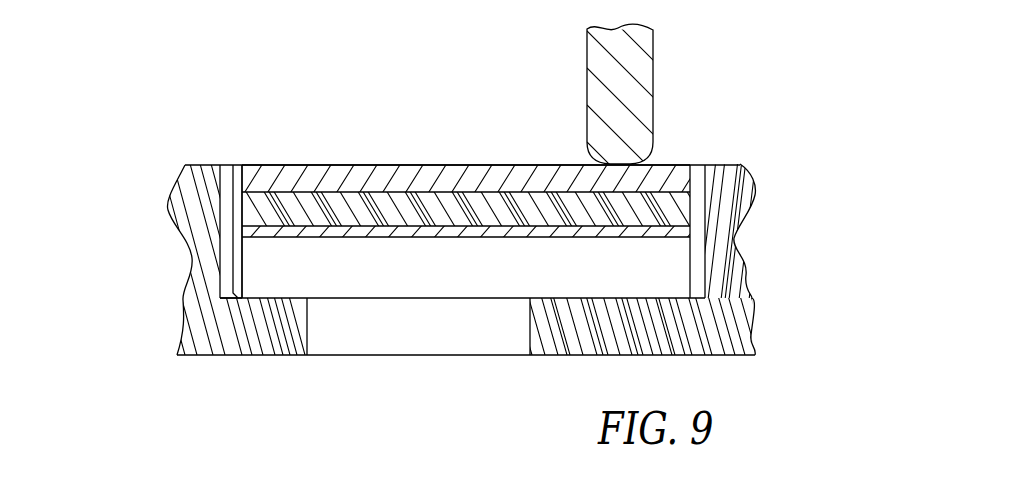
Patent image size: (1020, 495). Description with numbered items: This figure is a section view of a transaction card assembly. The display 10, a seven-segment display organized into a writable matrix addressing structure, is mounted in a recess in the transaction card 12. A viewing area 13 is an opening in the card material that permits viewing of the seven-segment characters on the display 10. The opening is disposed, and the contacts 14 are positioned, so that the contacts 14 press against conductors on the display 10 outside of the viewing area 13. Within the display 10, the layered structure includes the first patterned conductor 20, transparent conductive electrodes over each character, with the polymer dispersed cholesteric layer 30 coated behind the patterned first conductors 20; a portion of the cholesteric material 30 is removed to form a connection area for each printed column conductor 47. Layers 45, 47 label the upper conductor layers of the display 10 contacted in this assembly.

The display 10 is at (233, 226).
The transaction card 12 is at (303, 108).
The viewing area 13 is at (528, 366).
The contacts 14 is at (640, 88).
The first patterned conductor 20 is at (675, 229).
The polymer dispersed cholesteric layer 30 is at (668, 210).
The top layer 45 is at (425, 160).
The printed column conductor 47 is at (472, 140).